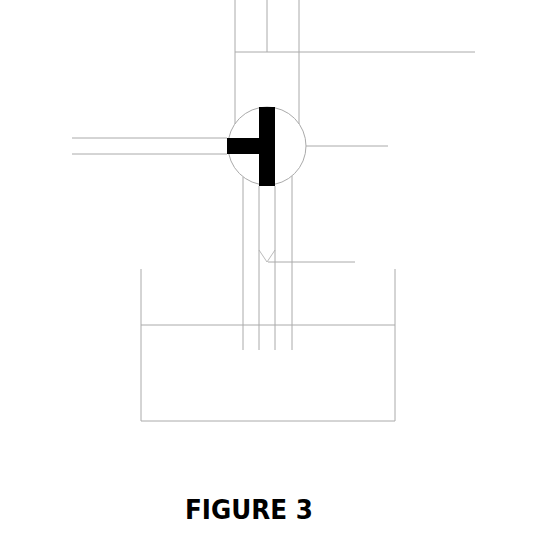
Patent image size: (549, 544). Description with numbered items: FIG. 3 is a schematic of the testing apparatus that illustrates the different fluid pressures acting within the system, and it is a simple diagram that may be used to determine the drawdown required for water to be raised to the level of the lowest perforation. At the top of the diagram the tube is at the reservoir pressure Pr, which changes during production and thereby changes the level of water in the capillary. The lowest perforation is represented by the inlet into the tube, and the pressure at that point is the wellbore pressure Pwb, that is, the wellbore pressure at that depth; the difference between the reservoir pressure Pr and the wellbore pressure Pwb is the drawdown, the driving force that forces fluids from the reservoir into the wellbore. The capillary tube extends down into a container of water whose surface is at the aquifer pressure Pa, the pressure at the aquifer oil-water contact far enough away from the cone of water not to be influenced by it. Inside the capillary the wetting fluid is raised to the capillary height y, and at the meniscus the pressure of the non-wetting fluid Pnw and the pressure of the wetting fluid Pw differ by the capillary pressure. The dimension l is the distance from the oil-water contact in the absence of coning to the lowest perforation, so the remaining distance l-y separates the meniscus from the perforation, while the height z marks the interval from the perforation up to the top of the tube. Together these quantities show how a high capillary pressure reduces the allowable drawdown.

The wellbore pressure Pwb is at (122, 152).
The reservoir pressure Pr is at (265, 74).
The pressure of the non-wetting fluid Pnw is at (266, 256).
The pressure of the wetting fluid Pw is at (263, 269).
The aquifer pressure Pa is at (169, 327).
The height z is at (341, 60).
The length l minus y l-y is at (341, 153).
The capillary height of the wetting fluid y is at (341, 270).
The distance from the oil-water contact to the lowest perforation l is at (368, 153).